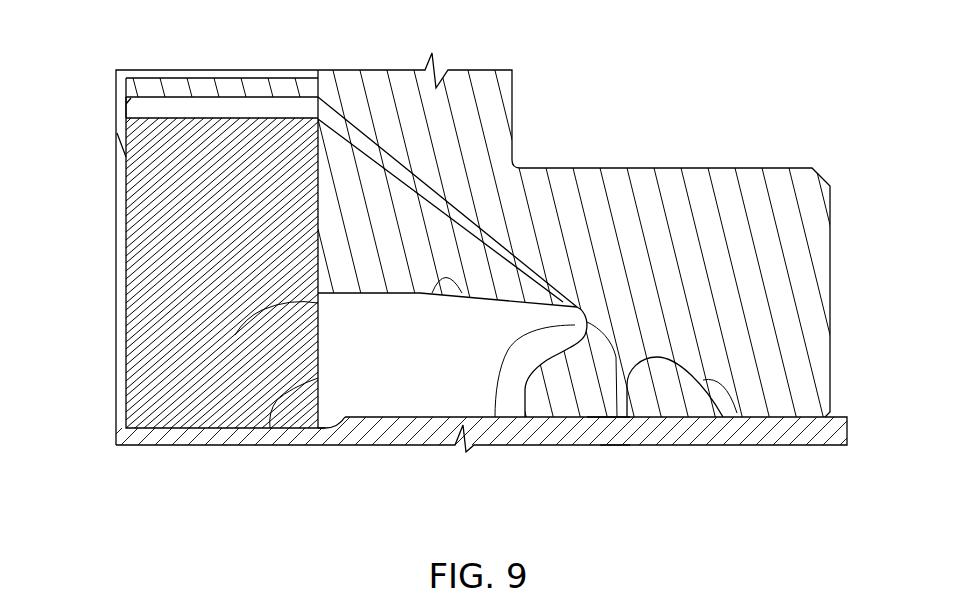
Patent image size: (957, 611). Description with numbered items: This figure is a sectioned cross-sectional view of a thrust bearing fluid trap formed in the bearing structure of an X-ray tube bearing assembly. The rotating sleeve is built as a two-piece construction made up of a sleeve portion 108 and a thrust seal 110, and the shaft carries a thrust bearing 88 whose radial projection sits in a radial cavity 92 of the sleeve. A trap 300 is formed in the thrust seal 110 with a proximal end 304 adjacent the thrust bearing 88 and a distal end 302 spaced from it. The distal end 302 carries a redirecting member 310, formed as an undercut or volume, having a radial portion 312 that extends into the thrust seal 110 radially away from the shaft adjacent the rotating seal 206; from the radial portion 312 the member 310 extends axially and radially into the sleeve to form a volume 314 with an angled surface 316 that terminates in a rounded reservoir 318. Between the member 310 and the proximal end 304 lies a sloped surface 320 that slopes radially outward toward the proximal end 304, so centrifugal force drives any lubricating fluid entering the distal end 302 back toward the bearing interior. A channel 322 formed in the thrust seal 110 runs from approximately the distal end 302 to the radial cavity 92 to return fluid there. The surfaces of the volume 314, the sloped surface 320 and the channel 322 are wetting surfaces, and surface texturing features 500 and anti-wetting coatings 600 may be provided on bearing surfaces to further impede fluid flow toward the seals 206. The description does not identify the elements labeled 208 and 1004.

The thrust bearing 88 is at (125, 240).
The radial cavity 92 is at (250, 112).
The sleeve portion 108 is at (183, 85).
The thrust seal 110 is at (368, 90).
The rotating seal 206 is at (615, 430).
The battery cell 208 is at (128, 377).
The trap 300 is at (358, 446).
The distal end 302 is at (613, 430).
The proximal end 304 is at (272, 425).
The redirecting member 310 is at (580, 300).
The radial portion 312 is at (517, 407).
The volume 314 is at (505, 405).
The angled surface 316 is at (558, 417).
The rounded reservoir 318 is at (647, 417).
The sloped surface 320 is at (428, 300).
The channel 322 is at (425, 160).
The surface texturing features 500 is at (340, 407).
The anti-wetting coatings 600 is at (317, 430).
The seal 1004 is at (737, 415).